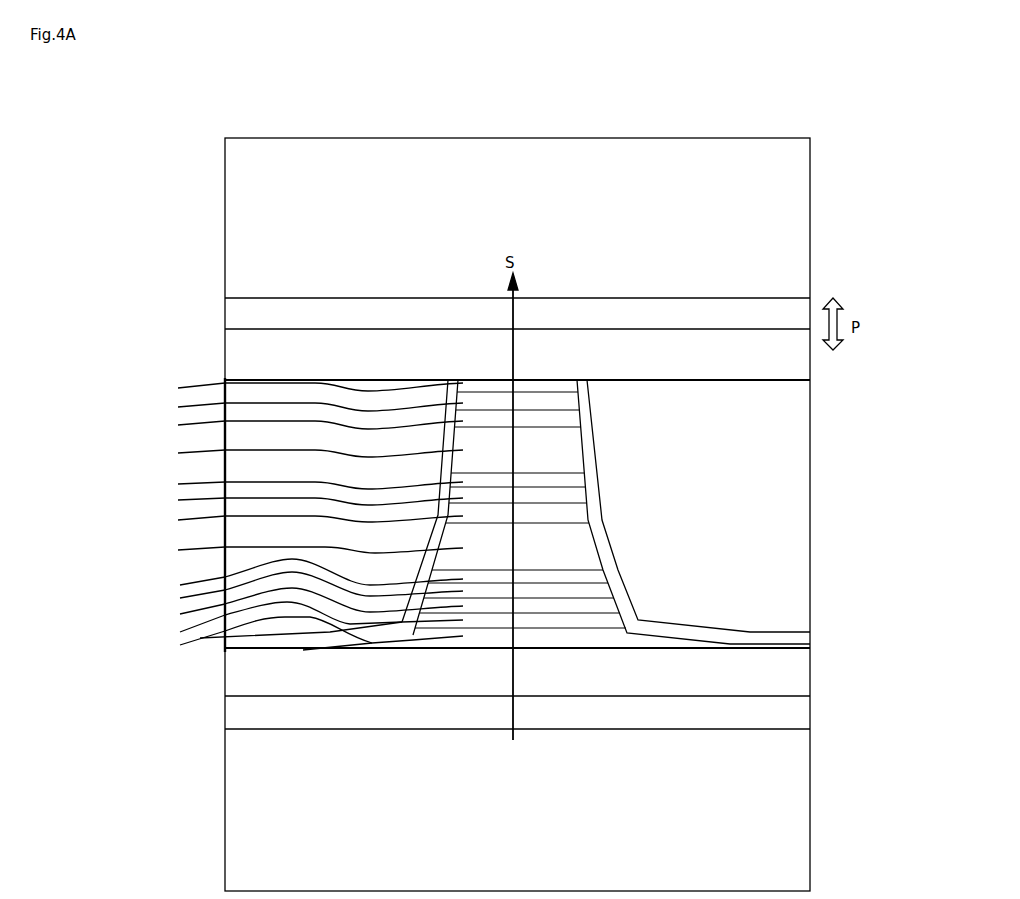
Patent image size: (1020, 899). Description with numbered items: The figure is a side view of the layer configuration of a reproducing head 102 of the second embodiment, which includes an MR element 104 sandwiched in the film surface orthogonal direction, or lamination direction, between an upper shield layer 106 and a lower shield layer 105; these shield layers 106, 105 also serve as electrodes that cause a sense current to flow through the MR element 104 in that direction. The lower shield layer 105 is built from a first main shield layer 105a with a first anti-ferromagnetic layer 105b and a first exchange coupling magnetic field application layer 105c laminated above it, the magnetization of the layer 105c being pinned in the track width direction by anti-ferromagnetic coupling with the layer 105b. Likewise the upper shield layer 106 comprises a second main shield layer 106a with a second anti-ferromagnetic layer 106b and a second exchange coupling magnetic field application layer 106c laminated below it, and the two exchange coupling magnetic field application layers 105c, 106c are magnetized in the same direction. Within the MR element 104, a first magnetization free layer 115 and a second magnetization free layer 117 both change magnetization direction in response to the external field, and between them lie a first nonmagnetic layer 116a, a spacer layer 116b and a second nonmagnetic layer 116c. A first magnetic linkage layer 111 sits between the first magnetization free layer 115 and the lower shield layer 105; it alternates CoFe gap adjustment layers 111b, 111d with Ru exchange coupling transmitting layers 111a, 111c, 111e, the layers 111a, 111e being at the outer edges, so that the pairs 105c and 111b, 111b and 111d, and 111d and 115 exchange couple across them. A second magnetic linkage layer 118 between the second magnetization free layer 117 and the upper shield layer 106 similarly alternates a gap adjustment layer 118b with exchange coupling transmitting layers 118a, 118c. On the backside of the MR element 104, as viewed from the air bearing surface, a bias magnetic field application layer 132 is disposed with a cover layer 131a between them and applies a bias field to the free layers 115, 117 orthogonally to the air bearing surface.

The reproducing head 102 is at (433, 133).
The MR element 104 is at (85, 400).
The lower shield layer 105 is at (884, 663).
The first main shield layer 105a is at (795, 806).
The first anti-ferromagnetic layer 105b is at (795, 712).
The first exchange coupling magnetic field application layer 105c is at (795, 671).
The upper shield layer 106 is at (138, 217).
The second main shield layer 106a is at (224, 227).
The second anti-ferromagnetic layer 106b is at (224, 320).
The second exchange coupling magnetic field application layer 106c is at (224, 362).
The first magnetic linkage layer 111 is at (141, 578).
The exchange coupling transmitting layer 111a is at (301, 637).
The gap adjustment layer 111b is at (301, 621).
The exchange coupling transmitting layer 111c is at (301, 606).
The gap adjustment layer 111d is at (301, 589).
The exchange coupling transmitting layer 111e is at (301, 575).
The first magnetization free layer 115 is at (291, 552).
The first nonmagnetic layer 116a is at (301, 521).
The spacer layer 116b is at (301, 502).
The second nonmagnetic layer 116c is at (301, 485).
The second magnetization free layer 117 is at (291, 454).
The second magnetic linkage layer 118 is at (139, 382).
The exchange coupling transmitting layer 118a is at (301, 426).
The gap adjustment layer 118b is at (301, 407).
The exchange coupling transmitting layer 118c is at (301, 391).
The cover layer 131a is at (263, 642).
The bias magnetic field application layer 132 is at (811, 500).